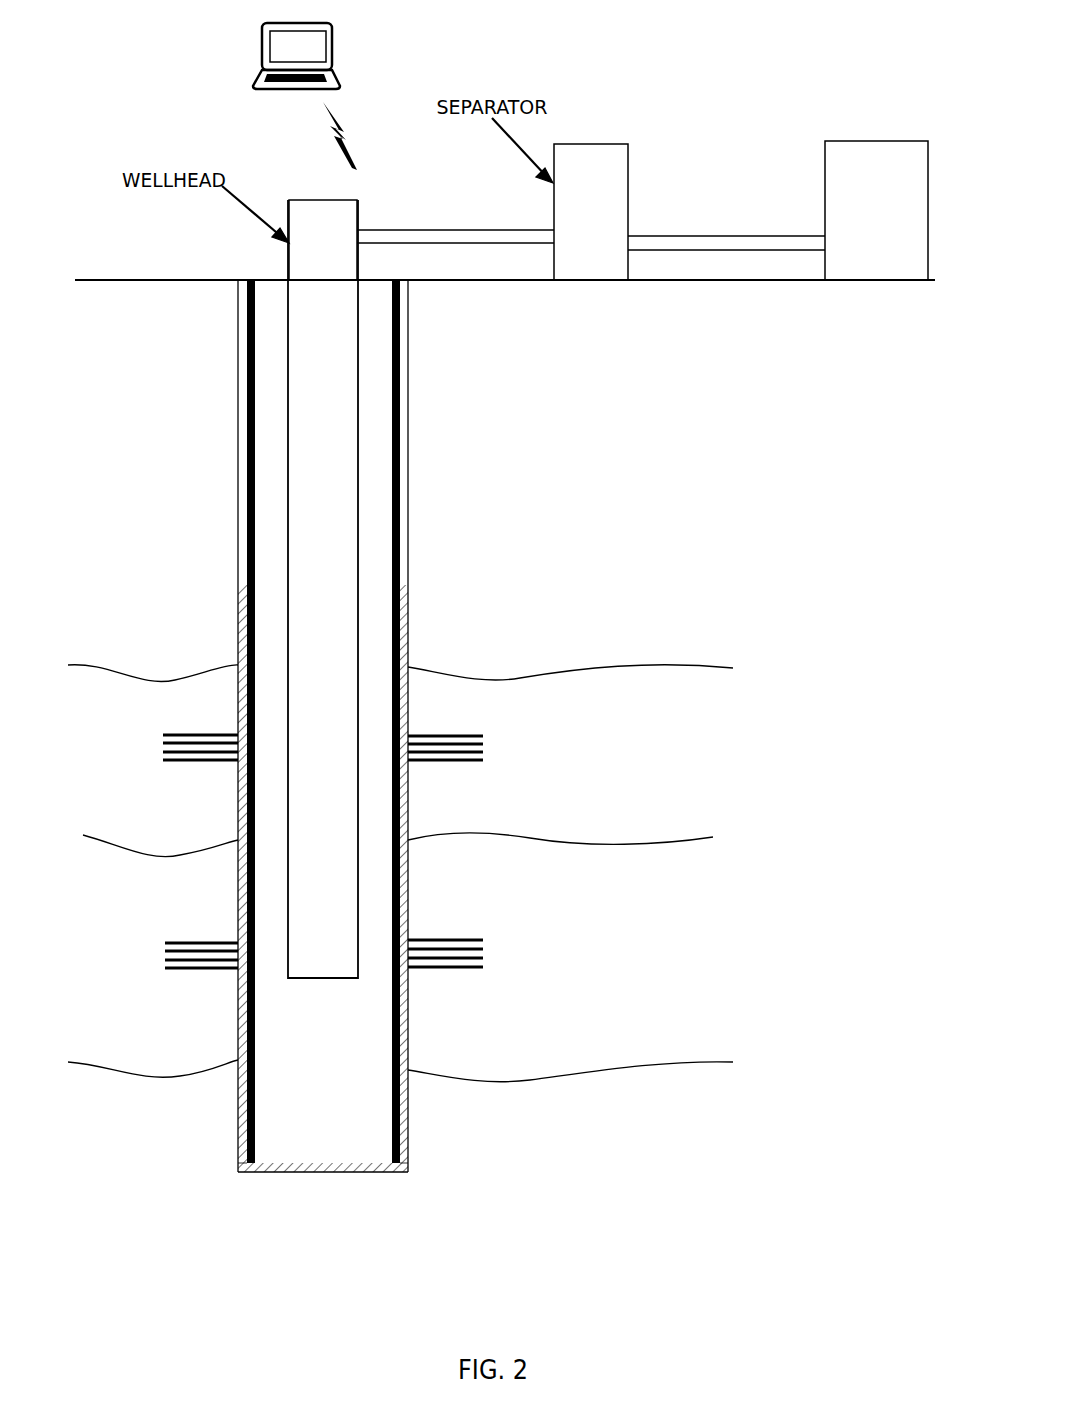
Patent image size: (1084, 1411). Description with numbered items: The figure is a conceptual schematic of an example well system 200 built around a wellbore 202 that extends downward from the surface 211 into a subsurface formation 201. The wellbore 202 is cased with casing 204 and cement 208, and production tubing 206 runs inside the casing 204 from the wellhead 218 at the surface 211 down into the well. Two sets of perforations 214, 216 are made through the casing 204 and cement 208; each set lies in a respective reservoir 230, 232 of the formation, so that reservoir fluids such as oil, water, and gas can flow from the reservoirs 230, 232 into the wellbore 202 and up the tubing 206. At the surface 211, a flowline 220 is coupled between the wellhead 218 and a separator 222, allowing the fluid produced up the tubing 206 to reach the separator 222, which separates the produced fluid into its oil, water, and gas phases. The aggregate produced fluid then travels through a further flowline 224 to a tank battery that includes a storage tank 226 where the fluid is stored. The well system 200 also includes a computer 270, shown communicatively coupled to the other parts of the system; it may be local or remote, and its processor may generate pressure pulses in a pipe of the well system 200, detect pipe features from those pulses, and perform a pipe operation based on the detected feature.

The well system 200 is at (170, 127).
The subsurface formation 201 is at (632, 371).
The wellbore 202 is at (408, 367).
The casing 204 is at (400, 458).
The tubing 206 is at (358, 535).
The cement 208 is at (408, 622).
The surface 211 is at (188, 279).
The perforations 214 is at (162, 750).
The perforations 216 is at (165, 958).
The wellhead 218 is at (290, 200).
The flowline 220 is at (441, 229).
The separator 222 is at (588, 143).
The flowline 224 is at (750, 235).
The storage tank 226 is at (883, 141).
The reservoir 230 is at (737, 668).
The reservoir 232 is at (738, 850).
The computer 270 is at (262, 45).